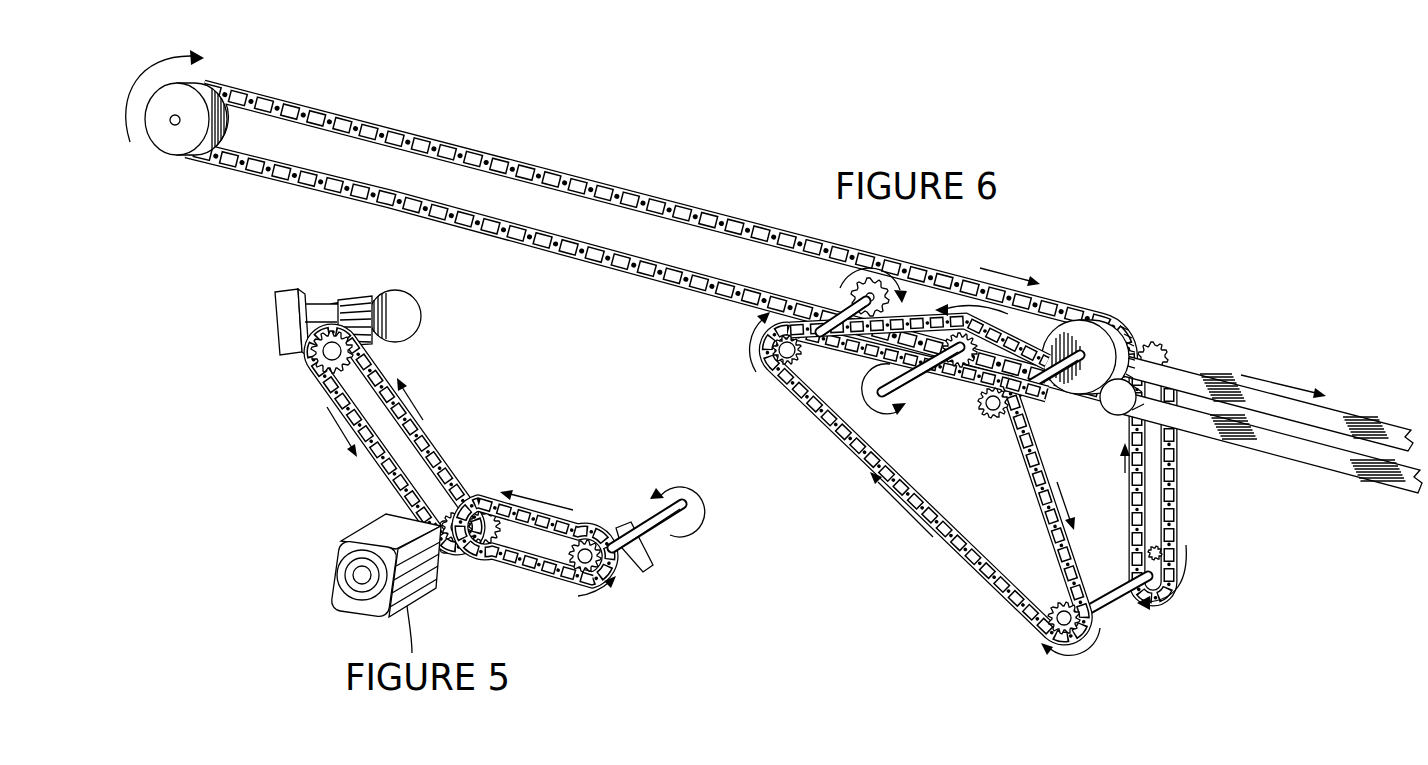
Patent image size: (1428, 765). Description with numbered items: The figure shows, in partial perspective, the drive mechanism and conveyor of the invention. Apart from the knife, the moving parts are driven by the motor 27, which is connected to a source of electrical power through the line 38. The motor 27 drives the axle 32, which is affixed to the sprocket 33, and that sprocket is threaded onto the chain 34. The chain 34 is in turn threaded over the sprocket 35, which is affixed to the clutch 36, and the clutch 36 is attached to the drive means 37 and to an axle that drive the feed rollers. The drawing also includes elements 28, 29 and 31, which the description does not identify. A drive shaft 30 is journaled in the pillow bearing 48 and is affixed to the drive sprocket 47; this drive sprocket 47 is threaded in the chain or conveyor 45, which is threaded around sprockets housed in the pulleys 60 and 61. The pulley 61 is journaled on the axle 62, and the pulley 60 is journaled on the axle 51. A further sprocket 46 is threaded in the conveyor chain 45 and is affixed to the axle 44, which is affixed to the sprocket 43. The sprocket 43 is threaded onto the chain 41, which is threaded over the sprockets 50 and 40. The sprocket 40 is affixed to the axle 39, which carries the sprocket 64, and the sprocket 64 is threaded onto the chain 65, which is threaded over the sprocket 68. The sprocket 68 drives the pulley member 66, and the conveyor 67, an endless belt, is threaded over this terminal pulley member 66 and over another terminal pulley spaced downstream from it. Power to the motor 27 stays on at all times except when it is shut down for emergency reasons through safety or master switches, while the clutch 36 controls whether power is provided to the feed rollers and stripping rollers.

In FIG. 5, the motor 27 is at (368, 602).
In FIG. 5, the drive chain 28 is at (545, 565).
In FIG. 5, the sprocket 29 is at (585, 542).
In FIG. 6, the drive shaft 30 is at (912, 373).
In FIG. 5, the drive shaft 30 is at (660, 515).
In FIG. 5, the sprocket 31 is at (472, 504).
In FIG. 5, the axle 32 is at (452, 558).
In FIG. 5, the sprocket 33 is at (396, 500).
In FIG. 5, the chain 34 is at (416, 432).
In FIG. 5, the sprocket 35 is at (320, 352).
In FIG. 5, the clutch 36 is at (385, 342).
In FIG. 5, the drive means 37 is at (412, 325).
In FIG. 5, the line 38 is at (416, 637).
In FIG. 6, the axle 39 is at (1056, 622).
In FIG. 6, the sprocket 40 is at (1057, 602).
In FIG. 6, the chain 41 is at (978, 556).
In FIG. 6, the sprocket 43 is at (800, 362).
In FIG. 6, the axle 44 is at (836, 314).
In FIG. 6, the chain or conveyor 45 is at (762, 229).
In FIG. 6, the sprocket 46 is at (872, 286).
In FIG. 6, the drive sprocket 47 is at (975, 340).
In FIG. 5, the pillow bearing 48 is at (637, 565).
In FIG. 6, the sprocket 50 is at (990, 416).
In FIG. 6, the axle 51 is at (1036, 383).
In FIG. 6, the pulley 60 is at (1106, 333).
In FIG. 6, the pulley 61 is at (188, 95).
In FIG. 6, the axle 62 is at (171, 124).
In FIG. 6, the sprocket 64 is at (1180, 548).
In FIG. 6, the chain 65 is at (1179, 489).
In FIG. 6, the pulley member 66 is at (1114, 405).
In FIG. 6, the conveyor 67 is at (1381, 425).
In FIG. 6, the sprocket 68 is at (1164, 356).